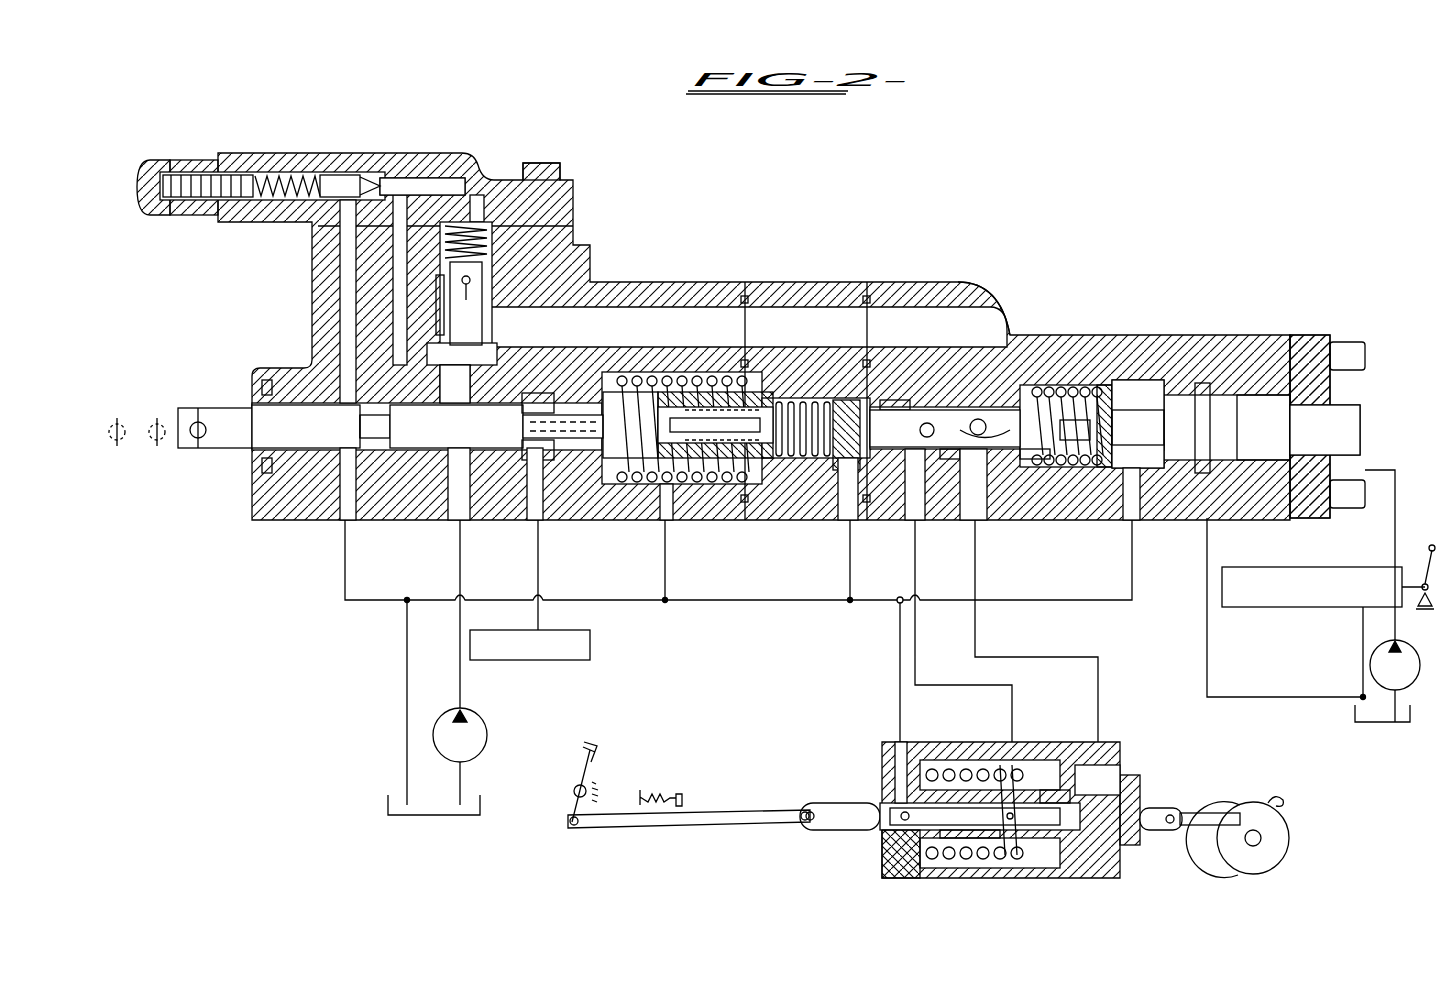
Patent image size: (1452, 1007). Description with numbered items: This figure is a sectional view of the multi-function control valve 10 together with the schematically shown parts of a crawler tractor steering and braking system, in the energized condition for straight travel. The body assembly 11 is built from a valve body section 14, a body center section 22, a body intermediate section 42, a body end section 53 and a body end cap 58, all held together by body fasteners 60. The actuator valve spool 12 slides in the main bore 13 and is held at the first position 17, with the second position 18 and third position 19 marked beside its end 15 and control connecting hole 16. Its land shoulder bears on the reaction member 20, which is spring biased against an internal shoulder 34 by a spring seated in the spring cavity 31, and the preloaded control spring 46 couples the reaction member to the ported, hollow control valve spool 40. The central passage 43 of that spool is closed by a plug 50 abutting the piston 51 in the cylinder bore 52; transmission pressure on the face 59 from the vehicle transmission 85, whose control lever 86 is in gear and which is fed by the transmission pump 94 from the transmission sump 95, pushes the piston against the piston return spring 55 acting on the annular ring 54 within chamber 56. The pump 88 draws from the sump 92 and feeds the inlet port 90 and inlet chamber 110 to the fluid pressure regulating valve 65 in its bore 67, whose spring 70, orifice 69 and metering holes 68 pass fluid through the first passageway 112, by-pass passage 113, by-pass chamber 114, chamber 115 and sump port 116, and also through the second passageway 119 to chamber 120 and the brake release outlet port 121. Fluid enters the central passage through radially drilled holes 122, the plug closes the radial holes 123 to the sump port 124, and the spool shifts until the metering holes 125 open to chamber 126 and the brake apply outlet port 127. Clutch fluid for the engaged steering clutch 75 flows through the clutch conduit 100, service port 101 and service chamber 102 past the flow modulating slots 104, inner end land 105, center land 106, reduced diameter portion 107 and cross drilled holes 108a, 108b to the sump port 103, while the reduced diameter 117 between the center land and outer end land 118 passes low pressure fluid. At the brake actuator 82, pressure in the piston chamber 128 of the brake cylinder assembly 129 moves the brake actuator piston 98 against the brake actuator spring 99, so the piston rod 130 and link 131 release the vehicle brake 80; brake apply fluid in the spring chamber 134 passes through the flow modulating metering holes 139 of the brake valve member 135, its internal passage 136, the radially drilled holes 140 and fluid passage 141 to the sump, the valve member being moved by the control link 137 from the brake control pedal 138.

The multi-function control valve 10 is at (835, 214).
The body assembly 11 is at (775, 255).
The actuator valve spool 12 is at (423, 433).
The main bore 13 is at (295, 410).
The valve body section 14 is at (628, 282).
The end of actuator valve spool 15 is at (240, 410).
The control connecting hole 16 is at (210, 438).
The first position 17 is at (198, 438).
The second position 18 is at (157, 446).
The third position 19 is at (117, 446).
The reaction member 20 is at (770, 522).
The body center section 22 is at (822, 283).
The spring cavity 31 is at (640, 455).
The internal shoulder 34 is at (742, 400).
The control valve spool 40 is at (1020, 400).
The body intermediate section 42 is at (965, 300).
The central passage 43 is at (950, 458).
The control spring 46 is at (820, 400).
The plug 50 is at (1075, 435).
The piston 51 is at (1120, 438).
The cylinder bore 52 is at (1170, 395).
The body end section 53 is at (1262, 335).
The annular ring 54 is at (1080, 395).
The piston return spring 55 is at (1117, 450).
The chamber 56 is at (1137, 382).
The body end cap 58 is at (1290, 335).
The face of piston 59 is at (1245, 432).
The body fasteners 60 is at (1370, 497).
The fluid pressure regulating valve 65 is at (515, 258).
The bore 67 is at (497, 324).
The metering holes 68 is at (466, 303).
The orifice 69 is at (482, 280).
The spring 70 is at (560, 236).
The steering clutch 75 is at (580, 662).
The vehicle brake 80 is at (1285, 825).
The brake actuator 82 is at (838, 775).
The vehicle transmission 85 is at (1320, 607).
The control lever 86 is at (1432, 546).
The pump 88 is at (480, 718).
The inlet port 90 is at (463, 522).
The sump 92 is at (388, 805).
The transmission pump 94 is at (1405, 690).
The transmission sump 95 is at (1352, 715).
The brake actuator piston 98 is at (1075, 878).
The brake actuator spring 99 is at (950, 862).
The clutch conduit 100 is at (538, 580).
The service port 101 is at (540, 522).
The service chamber 102 is at (537, 402).
The sump port 103 is at (668, 522).
The flow modulating slots 104 is at (610, 376).
The inner end land 105 is at (610, 458).
The center land 106 is at (437, 462).
The reduced diameter portion 107 is at (537, 449).
The cross drilled hole 108a is at (660, 392).
The cross drilled hole 108b is at (540, 392).
The inlet chamber 110 is at (465, 403).
The first passageway 112 is at (440, 183).
The by-pass passage 113 is at (393, 253).
The by-pass chamber 114 is at (410, 455).
The chamber 115 is at (340, 398).
The sump port 116 is at (343, 525).
The reduced diameter 117 is at (368, 428).
The outer end land 118 is at (286, 442).
The second passageway 119 is at (756, 331).
The chamber 120 is at (1030, 458).
The brake release outlet port 121 is at (985, 522).
The radially drilled holes 122 is at (990, 418).
The radial holes 123 is at (1068, 385).
The sump port 124 is at (1130, 522).
The metering holes 125 is at (975, 420).
The chamber 126 is at (905, 405).
The brake apply outlet port 127 is at (913, 522).
The piston chamber 128 is at (1095, 770).
The brake cylinder assembly 129 is at (1020, 878).
The piston rod 130 is at (1145, 810).
The link 131 is at (1195, 820).
The spring chamber 134 is at (985, 866).
The brake valve member 135 is at (840, 805).
The internal passage 136 is at (910, 835).
The control link 137 is at (745, 812).
The brake control pedal 138 is at (592, 753).
The flow modulating metering holes 139 is at (1015, 805).
The radially drilled holes 140 is at (905, 830).
The fluid passage 141 is at (895, 755).